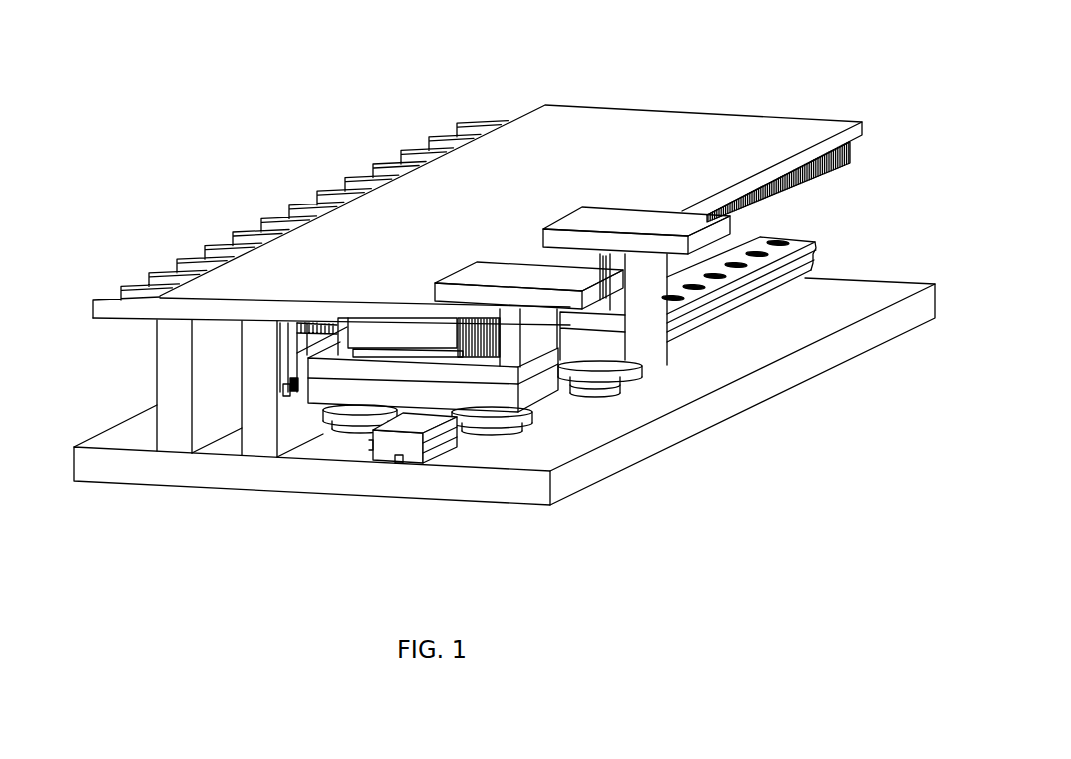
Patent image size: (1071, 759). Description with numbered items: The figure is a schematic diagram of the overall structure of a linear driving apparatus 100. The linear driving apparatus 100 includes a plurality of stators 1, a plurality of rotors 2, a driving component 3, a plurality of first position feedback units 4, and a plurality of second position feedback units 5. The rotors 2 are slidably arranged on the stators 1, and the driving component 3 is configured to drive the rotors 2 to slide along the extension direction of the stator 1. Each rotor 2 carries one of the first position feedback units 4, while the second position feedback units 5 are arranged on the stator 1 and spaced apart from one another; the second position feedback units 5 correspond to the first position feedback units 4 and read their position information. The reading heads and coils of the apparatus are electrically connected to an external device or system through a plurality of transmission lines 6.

The linear driving apparatus 100 is at (492, 90).
The stator 1 is at (160, 384).
The rotor 2 is at (540, 397).
The driving component 3 is at (411, 353).
The first position feedback unit 4 is at (293, 401).
The second position feedback unit 5 is at (278, 399).
The transmission line 6 is at (310, 220).